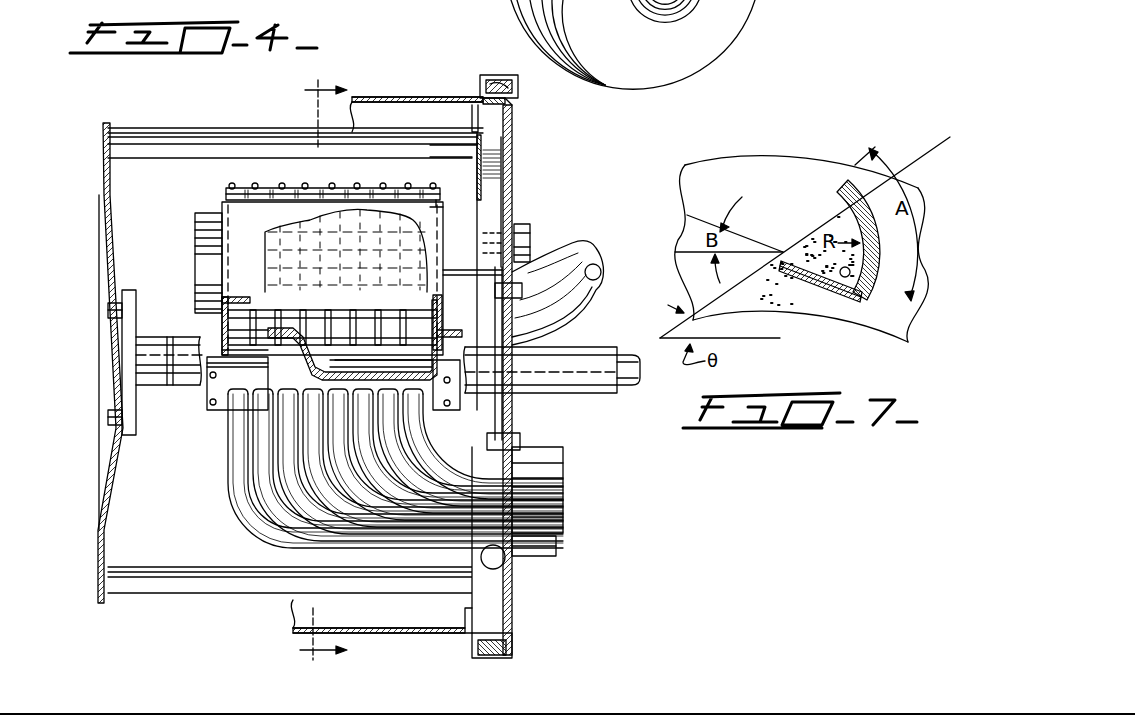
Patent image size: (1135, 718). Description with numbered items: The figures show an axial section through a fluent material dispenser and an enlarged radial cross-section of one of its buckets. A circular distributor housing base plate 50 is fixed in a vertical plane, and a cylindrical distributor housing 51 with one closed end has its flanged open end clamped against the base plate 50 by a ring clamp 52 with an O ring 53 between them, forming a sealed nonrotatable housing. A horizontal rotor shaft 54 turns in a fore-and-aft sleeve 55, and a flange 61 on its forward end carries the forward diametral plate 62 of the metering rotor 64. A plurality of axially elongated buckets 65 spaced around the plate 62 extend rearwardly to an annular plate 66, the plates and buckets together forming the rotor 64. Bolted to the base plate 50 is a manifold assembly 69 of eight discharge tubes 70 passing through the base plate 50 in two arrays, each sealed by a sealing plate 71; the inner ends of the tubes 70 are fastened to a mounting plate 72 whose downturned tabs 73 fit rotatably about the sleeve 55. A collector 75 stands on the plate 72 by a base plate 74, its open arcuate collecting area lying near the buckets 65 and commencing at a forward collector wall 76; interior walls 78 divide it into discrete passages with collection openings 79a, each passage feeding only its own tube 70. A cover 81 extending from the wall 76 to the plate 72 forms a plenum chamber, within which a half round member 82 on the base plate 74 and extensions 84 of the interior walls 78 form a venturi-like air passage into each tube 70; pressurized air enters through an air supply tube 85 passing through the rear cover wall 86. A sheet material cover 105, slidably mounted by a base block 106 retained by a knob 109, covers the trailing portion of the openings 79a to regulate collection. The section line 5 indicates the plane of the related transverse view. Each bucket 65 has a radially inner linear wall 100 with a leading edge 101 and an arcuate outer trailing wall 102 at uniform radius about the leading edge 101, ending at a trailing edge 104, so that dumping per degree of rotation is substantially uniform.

In FIG. 4, the section line 5- 5 is at (312, 361).
In FIG. 4, the distributor housing base plate 50 is at (512, 133).
In FIG. 4, the distributor housing 51 is at (410, 97).
In FIG. 4, the ring clamp 52 is at (490, 77).
In FIG. 4, the O ring 53 is at (508, 100).
In FIG. 4, the rotor shaft 54 is at (630, 395).
In FIG. 4, the sleeve 55 is at (188, 387).
In FIG. 4, the flange 61 is at (140, 428).
In FIG. 4, the forward diametral plate 62 is at (110, 240).
In FIG. 4, the metering rotor 64 is at (145, 126).
In FIG. 4, the buckets 65 is at (301, 115).
In FIG. 7, the buckets 65 is at (812, 285).
In FIG. 4, the annular plate 66 is at (480, 143).
In FIG. 7, the annular plate 66 is at (780, 165).
In FIG. 4, the manifold assembly 69 is at (355, 472).
In FIG. 4, the discharge tubes 70 is at (287, 502).
In FIG. 4, the sealing plate 71 is at (507, 565).
In FIG. 4, the mounting plate 72 is at (209, 412).
In FIG. 4, the downturned tabs 73 is at (460, 397).
In FIG. 4, the base plate 74 is at (215, 357).
In FIG. 4, the collector 75 is at (228, 194).
In FIG. 4, the forward collector wall 76 is at (343, 230).
In FIG. 4, the interior walls 78 is at (305, 186).
In FIG. 4, the material collection openings 79a is at (398, 190).
In FIG. 4, the cover 81 is at (255, 243).
In FIG. 4, the half round member 82 is at (227, 327).
In FIG. 4, the extended lower portions of interior walls 84 is at (300, 307).
In FIG. 4, the air supply tube 85 is at (572, 325).
In FIG. 4, the rear cover wall 86 is at (443, 227).
In FIG. 7, the radially inner linear wall 100 is at (847, 292).
In FIG. 7, the leading edge 101 is at (783, 250).
In FIG. 7, the arcuate radially outer trailing wall 102 is at (835, 198).
In FIG. 7, the trailing edge 104 is at (848, 190).
In FIG. 4, the sheet material cover 105 is at (207, 213).
In FIG. 4, the base block 106 is at (508, 210).
In FIG. 4, the knob 109 is at (532, 240).